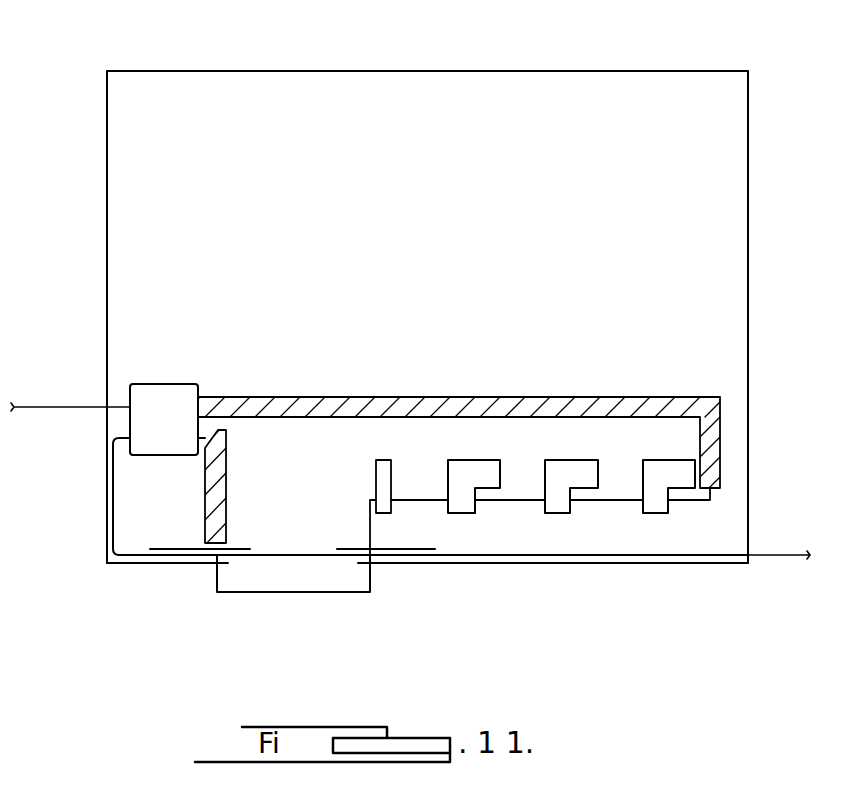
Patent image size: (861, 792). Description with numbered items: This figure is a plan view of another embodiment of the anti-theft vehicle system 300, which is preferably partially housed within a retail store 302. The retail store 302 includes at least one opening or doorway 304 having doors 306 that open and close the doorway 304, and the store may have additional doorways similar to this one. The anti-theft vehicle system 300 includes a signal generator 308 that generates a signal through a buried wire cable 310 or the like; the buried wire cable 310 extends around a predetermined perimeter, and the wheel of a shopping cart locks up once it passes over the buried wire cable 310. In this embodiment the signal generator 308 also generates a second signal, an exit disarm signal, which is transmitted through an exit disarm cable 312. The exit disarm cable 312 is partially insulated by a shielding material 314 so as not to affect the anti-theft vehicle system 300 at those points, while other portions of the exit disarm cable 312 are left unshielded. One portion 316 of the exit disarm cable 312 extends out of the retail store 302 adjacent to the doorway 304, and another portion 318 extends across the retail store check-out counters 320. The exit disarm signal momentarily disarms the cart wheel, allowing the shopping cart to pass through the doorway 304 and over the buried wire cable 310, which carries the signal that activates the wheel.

The anti-theft vehicle system 300 is at (226, 350).
The retail store 302 is at (422, 70).
The doorway 304 is at (270, 555).
The doors 306 is at (417, 550).
The signal generator 308 is at (155, 383).
The buried wire cable 310 is at (32, 405).
The exit disarm cable 312 is at (357, 405).
The shielding material 314 is at (435, 398).
The portion of the exit disarm cable 316 is at (327, 593).
The another portion of the exit disarm cable 318 is at (527, 503).
The check-out counters 320 is at (555, 462).